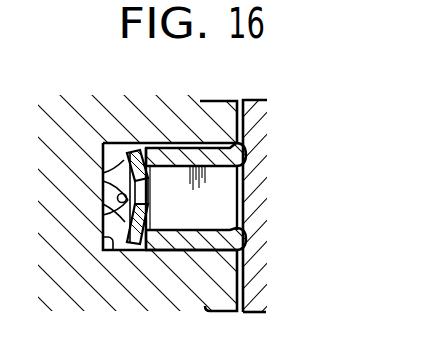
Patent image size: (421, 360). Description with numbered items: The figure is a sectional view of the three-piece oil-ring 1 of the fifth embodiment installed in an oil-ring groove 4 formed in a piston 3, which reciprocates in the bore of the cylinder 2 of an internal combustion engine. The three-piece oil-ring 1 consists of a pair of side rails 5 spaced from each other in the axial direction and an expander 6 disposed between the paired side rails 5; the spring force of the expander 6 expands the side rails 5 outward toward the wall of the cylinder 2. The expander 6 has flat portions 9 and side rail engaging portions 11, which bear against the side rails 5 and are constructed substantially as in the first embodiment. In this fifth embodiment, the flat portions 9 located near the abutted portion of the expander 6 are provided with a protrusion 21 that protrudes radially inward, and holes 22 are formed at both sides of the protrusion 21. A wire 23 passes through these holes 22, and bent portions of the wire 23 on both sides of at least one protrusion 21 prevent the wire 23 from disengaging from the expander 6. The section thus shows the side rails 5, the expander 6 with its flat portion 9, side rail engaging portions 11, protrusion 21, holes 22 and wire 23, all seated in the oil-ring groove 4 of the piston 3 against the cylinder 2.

The three-piece oil-ring 1 is at (212, 134).
The cylinder 2 is at (243, 218).
The piston 3 is at (243, 288).
The oil-ring groove 4 is at (110, 249).
The side rail 5 is at (180, 151).
The expander 6 is at (210, 195).
The flat portion 9 is at (151, 200).
The side rail engaging portion 11 is at (137, 155).
The protrusion 21 is at (117, 198).
The hole 22 is at (124, 170).
The wire 23 is at (113, 196).